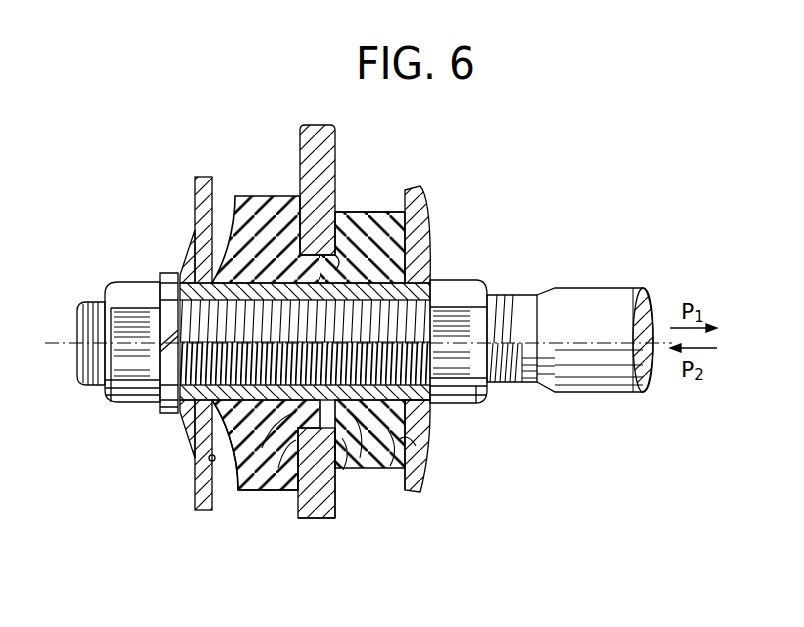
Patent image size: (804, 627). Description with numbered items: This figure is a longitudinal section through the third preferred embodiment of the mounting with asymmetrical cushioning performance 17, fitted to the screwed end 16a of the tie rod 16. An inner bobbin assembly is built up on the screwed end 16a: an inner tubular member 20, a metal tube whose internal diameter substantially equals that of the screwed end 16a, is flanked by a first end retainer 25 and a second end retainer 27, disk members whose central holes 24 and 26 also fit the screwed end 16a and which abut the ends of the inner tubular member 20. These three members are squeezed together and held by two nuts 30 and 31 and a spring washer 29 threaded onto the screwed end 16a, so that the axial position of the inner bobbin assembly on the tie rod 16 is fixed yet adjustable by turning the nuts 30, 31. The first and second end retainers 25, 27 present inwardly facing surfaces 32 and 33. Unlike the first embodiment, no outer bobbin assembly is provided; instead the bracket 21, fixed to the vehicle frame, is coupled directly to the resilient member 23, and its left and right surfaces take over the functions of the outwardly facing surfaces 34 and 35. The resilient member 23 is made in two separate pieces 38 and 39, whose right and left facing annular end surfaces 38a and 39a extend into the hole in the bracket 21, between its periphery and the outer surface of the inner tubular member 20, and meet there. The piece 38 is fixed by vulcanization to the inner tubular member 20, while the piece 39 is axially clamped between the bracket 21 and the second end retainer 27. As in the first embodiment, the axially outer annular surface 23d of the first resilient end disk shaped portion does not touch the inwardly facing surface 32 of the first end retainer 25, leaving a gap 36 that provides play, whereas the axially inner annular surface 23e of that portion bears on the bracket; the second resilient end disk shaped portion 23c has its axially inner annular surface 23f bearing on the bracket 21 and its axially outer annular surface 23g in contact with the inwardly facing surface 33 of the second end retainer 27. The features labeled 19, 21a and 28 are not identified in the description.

The tie rod 16 is at (597, 287).
The screwed end 16a is at (506, 297).
The mounting with asymmetrical cushioning performance 17 is at (391, 186).
The bolt end 19 is at (62, 342).
The inner tubular member 20 is at (372, 290).
The bracket 21 is at (302, 151).
The boss portion 21a is at (345, 246).
The resilient member 23 is at (274, 208).
The second resilient end disk shaped portion 23c is at (426, 470).
The axially outer annular surface of the first resilient end disk shaped portion 23d is at (236, 492).
The axially inner annular surface of the first resilient end disk shaped portion 23e is at (310, 520).
The axially inner annular surface of the second resilient end disk shaped portion 23f is at (335, 512).
The axially outer annular surface of the second resilient end disk shaped portion 23g is at (430, 427).
The hole 24 is at (178, 386).
The first end retainer 25 is at (197, 240).
The hole 26 is at (438, 392).
The second end retainer 27 is at (426, 212).
The nut 28 is at (92, 374).
The spring washer 29 is at (168, 274).
The nut 30 is at (115, 402).
The nut 31 is at (481, 398).
The inwardly facing surface of the first retainer 32 is at (208, 460).
The inwardly facing surface of the second retainer 33 is at (416, 446).
The outwardly facing surface 34 is at (305, 472).
The outwardly facing surface 35 is at (343, 470).
The gap 36 is at (207, 512).
The resilient member piece 38 is at (250, 492).
The right facing annular end surface 38a is at (296, 440).
The resilient member piece 39 is at (392, 470).
The left facing annular end surface 39a is at (360, 445).